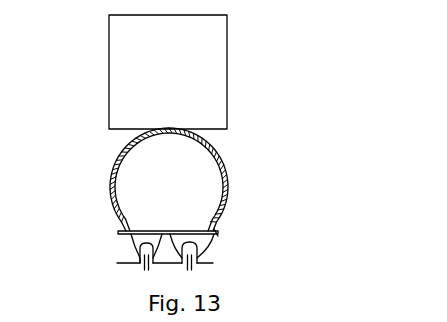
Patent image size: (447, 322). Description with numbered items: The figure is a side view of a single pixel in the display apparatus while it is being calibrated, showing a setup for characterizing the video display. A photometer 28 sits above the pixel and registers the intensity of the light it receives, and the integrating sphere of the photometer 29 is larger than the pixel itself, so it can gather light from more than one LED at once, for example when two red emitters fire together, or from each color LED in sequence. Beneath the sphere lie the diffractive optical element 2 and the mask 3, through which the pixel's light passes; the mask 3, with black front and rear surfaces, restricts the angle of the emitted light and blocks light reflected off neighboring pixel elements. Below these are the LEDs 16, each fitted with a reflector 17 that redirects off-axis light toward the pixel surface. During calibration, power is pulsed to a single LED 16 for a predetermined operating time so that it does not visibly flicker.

The photometer 28 is at (228, 69).
The integrating sphere of the photometer 29 is at (229, 168).
The mask 3 is at (217, 231).
The diffractive optical element 2 is at (164, 234).
The reflector 17 is at (133, 243).
The LED 16 is at (118, 232).